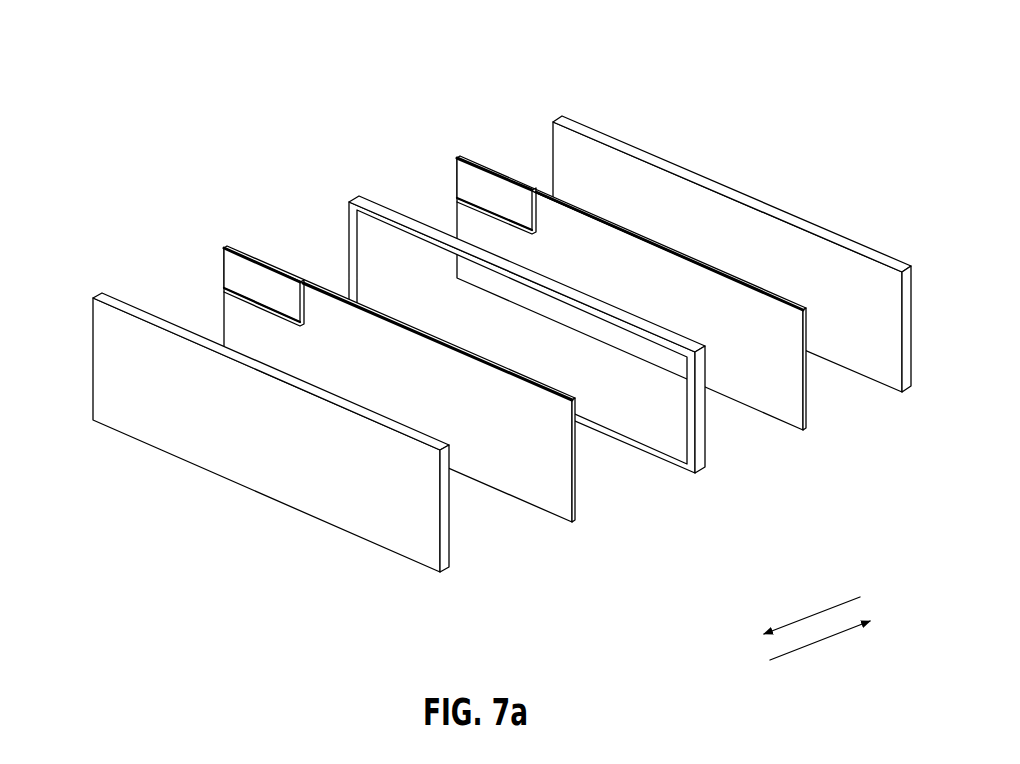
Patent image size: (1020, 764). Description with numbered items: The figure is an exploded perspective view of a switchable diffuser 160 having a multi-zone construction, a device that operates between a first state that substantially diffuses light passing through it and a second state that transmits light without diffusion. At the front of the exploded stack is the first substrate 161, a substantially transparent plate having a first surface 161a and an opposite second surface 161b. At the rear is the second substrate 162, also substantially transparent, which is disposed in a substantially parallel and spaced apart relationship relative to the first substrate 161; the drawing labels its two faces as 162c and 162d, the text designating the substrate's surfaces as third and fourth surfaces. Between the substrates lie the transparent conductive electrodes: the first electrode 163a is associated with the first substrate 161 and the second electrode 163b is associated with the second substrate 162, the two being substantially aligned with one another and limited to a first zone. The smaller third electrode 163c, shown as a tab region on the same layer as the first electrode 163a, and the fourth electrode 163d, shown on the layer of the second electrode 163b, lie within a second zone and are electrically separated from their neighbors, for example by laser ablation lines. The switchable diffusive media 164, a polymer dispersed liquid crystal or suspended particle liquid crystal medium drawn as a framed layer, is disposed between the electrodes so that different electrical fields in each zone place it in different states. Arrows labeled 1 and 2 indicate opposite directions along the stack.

The switchable diffuser 160 is at (286, 80).
The first substrate 161 is at (250, 443).
The first surface 161a is at (345, 500).
The second surface 161b is at (452, 550).
The second substrate 162 is at (703, 265).
The front face of second panel 162c is at (880, 293).
The side face of second panel 162d is at (912, 365).
The first electrode 163a is at (388, 391).
The second electrode 163b is at (620, 300).
The third electrode 163c is at (224, 248).
The fourth electrode 163d is at (457, 158).
The switchable diffusive media 164 is at (666, 425).
The first direction 1 is at (802, 625).
The second direction 2 is at (829, 632).